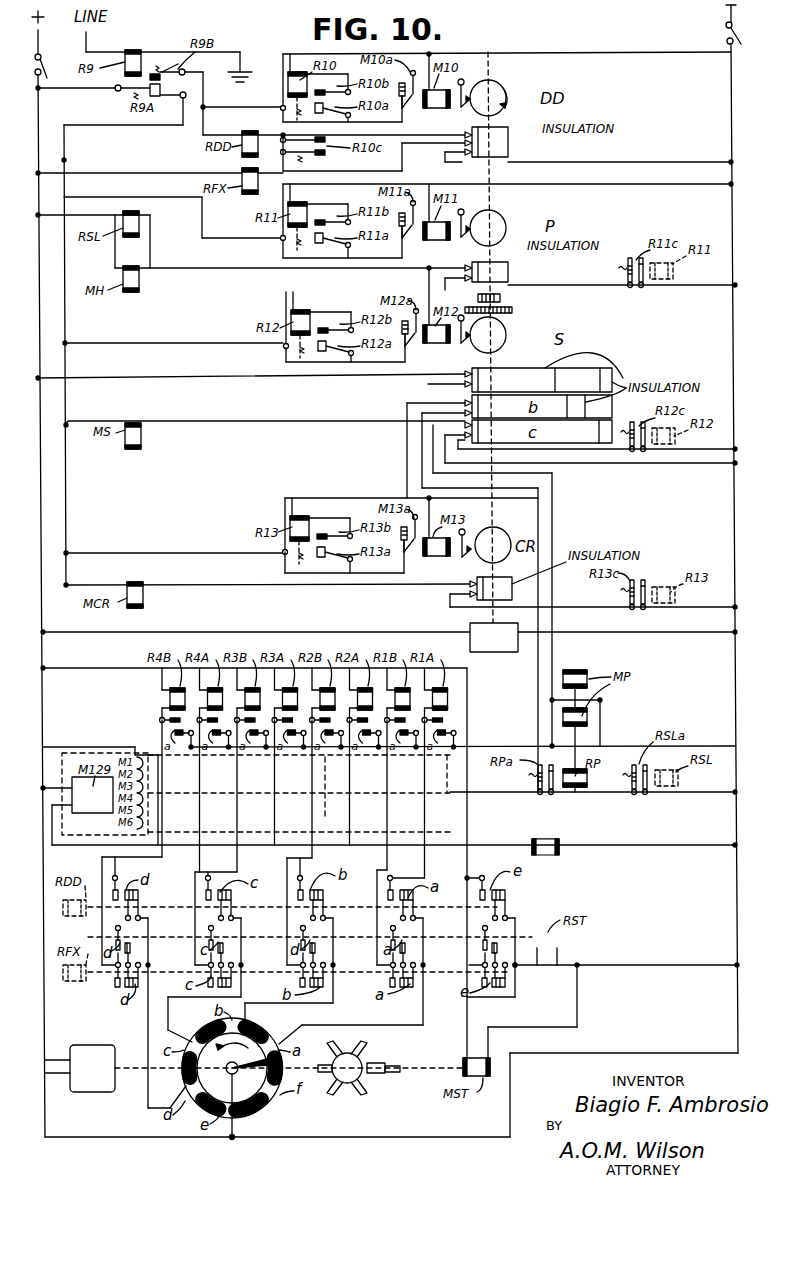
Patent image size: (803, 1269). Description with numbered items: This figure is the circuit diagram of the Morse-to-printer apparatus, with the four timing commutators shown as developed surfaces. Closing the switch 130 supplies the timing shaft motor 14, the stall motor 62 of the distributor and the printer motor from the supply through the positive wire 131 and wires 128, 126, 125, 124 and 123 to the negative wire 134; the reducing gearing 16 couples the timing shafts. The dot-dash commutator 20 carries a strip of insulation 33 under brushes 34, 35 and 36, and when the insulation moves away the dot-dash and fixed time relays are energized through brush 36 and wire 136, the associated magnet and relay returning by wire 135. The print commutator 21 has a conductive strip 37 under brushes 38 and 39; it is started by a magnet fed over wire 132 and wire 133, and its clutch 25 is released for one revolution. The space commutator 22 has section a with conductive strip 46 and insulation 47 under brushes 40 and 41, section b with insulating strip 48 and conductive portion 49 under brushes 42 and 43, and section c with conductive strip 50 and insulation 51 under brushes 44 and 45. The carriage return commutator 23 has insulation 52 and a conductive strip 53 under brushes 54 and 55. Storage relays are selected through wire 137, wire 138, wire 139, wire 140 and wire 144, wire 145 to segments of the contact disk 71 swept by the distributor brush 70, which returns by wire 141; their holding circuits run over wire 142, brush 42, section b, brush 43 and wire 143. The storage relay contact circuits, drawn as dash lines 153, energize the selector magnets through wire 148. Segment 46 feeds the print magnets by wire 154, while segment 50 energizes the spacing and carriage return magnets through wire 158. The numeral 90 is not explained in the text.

The timing shaft motor 14 is at (502, 652).
The reducing gearing 16 is at (503, 298).
The commutator 20 is at (510, 151).
The commutator 21 is at (510, 272).
The commutator 22 is at (524, 368).
The commutator 23 is at (512, 591).
The P clutch 25 is at (497, 92).
The strip of insulation 33 is at (497, 138).
The brush 34 is at (466, 134).
The brush 35 is at (462, 144).
The brush 36 is at (464, 158).
The conductive strip 37 is at (498, 262).
The brush 38 is at (466, 267).
The brush 39 is at (465, 290).
The brush 40 is at (470, 372).
The brush 41 is at (452, 374).
The brush 42 is at (392, 384).
The brush 43 is at (407, 404).
The brush 44 is at (422, 414).
The brush 45 is at (445, 443).
The conductive strip 46 is at (580, 374).
The insulation 47 is at (503, 376).
The insulating strip 48 is at (588, 416).
The conductive portion 49 is at (566, 414).
The conductive strip 50 is at (612, 428).
The insulation 51 is at (548, 430).
The insulation 52 is at (501, 580).
The conductive strip 53 is at (478, 577).
The brush 54 is at (470, 583).
The brush 55 is at (452, 598).
The stall motor 62 is at (90, 1047).
The brush 70 is at (250, 1065).
The contact disk 71 is at (262, 1117).
The selector unit 90 is at (62, 784).
The wire 123 is at (109, 1138).
The wire 124 is at (58, 1054).
The wire 125 is at (90, 847).
The wire 126 is at (52, 806).
The wire 128 is at (172, 632).
The switch 130 is at (42, 59).
The positive wire 131 is at (38, 128).
The wire 132 is at (64, 160).
The wire 133 is at (600, 186).
The negative wire 134 is at (731, 99).
The wire 135 is at (557, 54).
The wire 136 is at (603, 168).
The wire 137 is at (88, 668).
The wire 138 is at (495, 928).
The wire 139 is at (409, 816).
The wire 140 is at (412, 1028).
The wire 141 is at (228, 1074).
The wire 142 is at (542, 716).
The wire 143 is at (650, 467).
The wire 144 is at (352, 826).
The wire 145 is at (330, 1004).
The wire 148 is at (484, 797).
The dash lines 153 is at (322, 800).
The wire 154 is at (553, 523).
The wire 158 is at (407, 484).